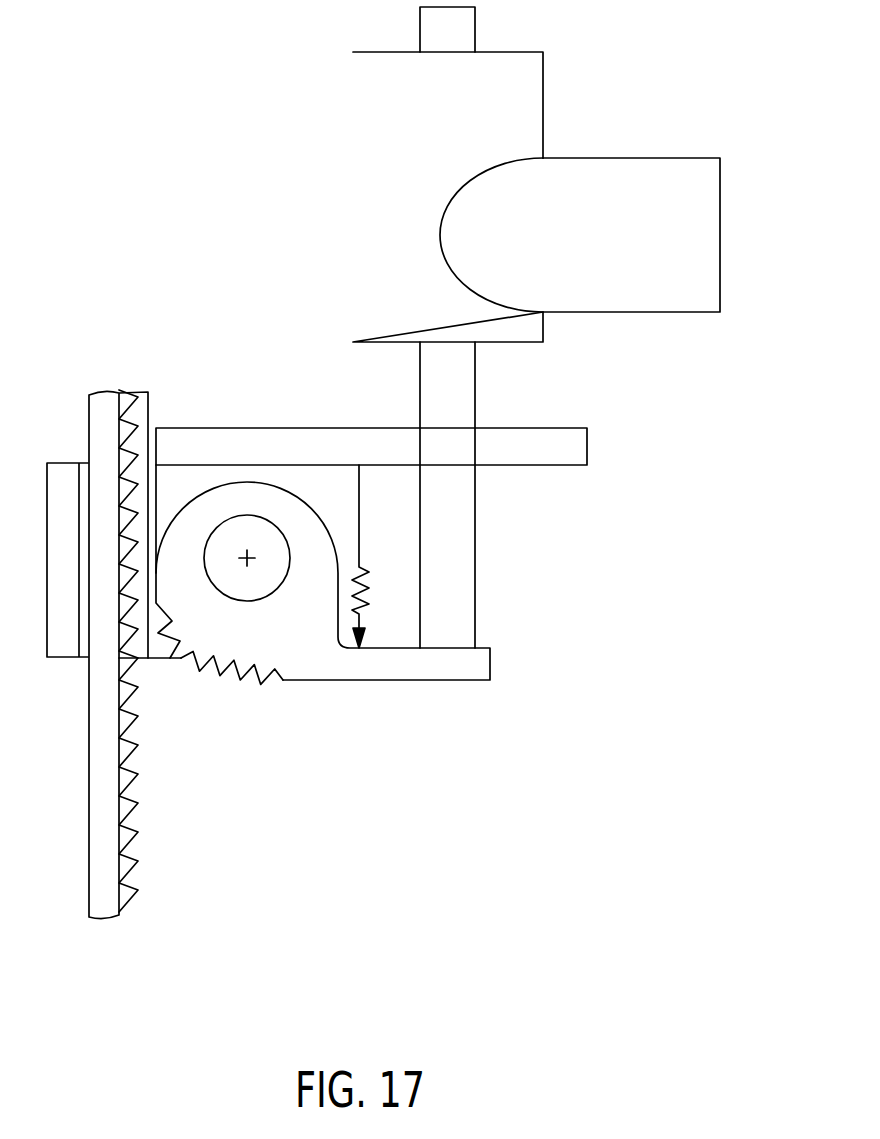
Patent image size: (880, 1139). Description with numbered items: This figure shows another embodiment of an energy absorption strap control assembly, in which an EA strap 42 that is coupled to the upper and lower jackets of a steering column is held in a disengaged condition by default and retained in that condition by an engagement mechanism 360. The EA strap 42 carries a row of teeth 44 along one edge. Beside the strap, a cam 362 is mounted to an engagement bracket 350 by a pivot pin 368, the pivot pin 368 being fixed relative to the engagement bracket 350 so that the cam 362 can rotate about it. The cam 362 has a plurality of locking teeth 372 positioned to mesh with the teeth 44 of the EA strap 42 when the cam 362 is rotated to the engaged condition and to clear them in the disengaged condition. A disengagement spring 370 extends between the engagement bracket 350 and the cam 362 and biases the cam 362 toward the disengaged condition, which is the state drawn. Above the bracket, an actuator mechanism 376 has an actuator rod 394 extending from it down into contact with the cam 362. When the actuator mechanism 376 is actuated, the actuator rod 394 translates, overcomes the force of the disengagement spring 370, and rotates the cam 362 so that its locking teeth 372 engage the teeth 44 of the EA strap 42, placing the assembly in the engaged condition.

The EA strap 42 is at (109, 409).
The teeth 44 is at (128, 841).
The engagement bracket 350 is at (577, 443).
The engagement mechanism 360 is at (260, 333).
The cam 362 is at (352, 668).
The pivot pin 368 is at (259, 530).
The disengagement spring 370 is at (390, 599).
The locking teeth 372 is at (222, 677).
The actuator mechanism 376 is at (563, 78).
The actuator rod 394 is at (463, 618).